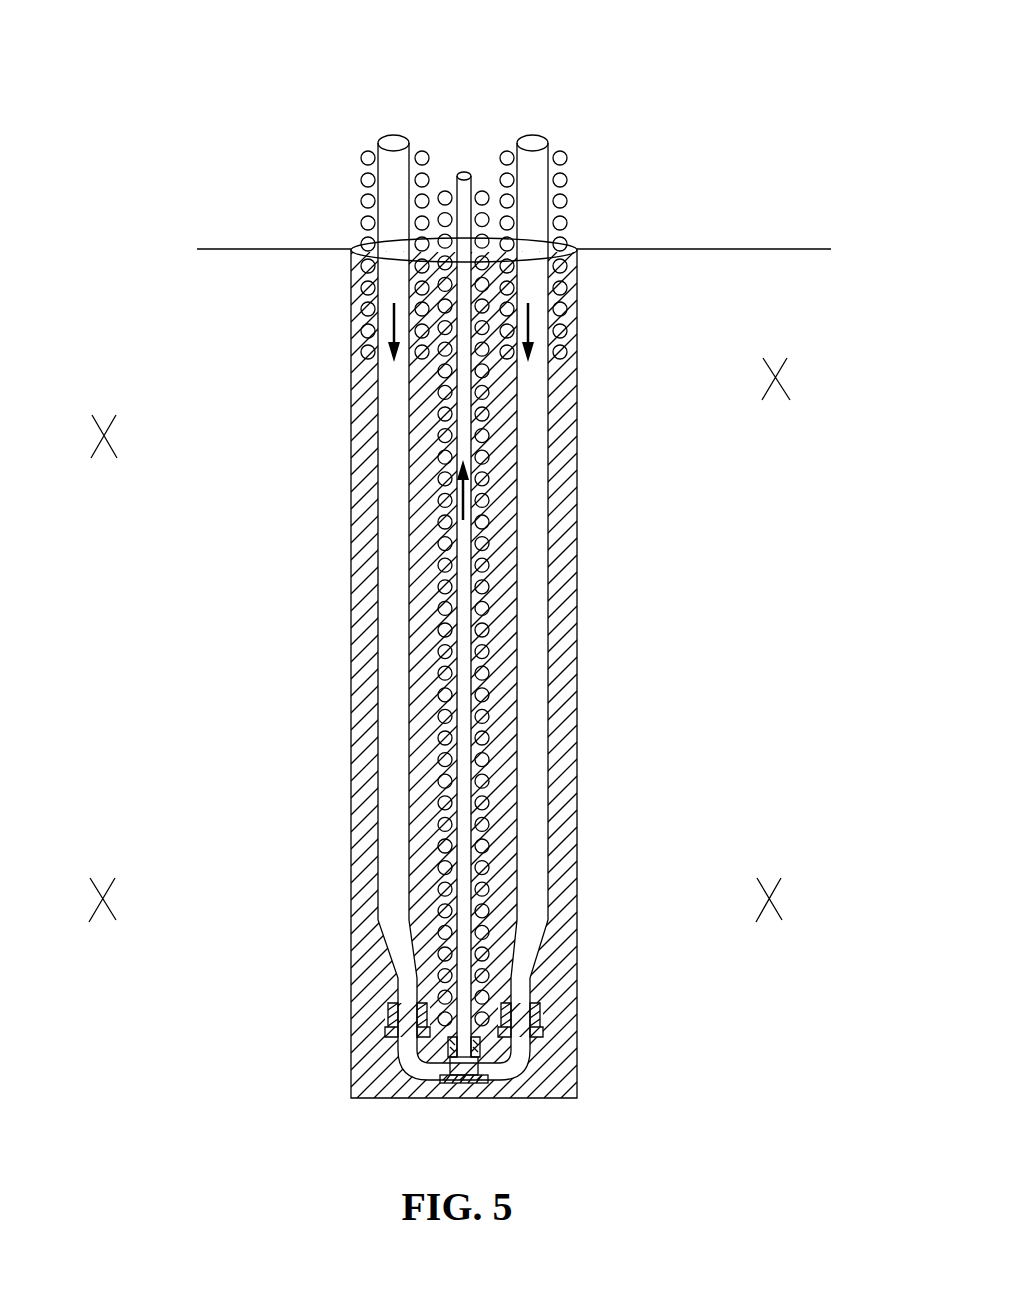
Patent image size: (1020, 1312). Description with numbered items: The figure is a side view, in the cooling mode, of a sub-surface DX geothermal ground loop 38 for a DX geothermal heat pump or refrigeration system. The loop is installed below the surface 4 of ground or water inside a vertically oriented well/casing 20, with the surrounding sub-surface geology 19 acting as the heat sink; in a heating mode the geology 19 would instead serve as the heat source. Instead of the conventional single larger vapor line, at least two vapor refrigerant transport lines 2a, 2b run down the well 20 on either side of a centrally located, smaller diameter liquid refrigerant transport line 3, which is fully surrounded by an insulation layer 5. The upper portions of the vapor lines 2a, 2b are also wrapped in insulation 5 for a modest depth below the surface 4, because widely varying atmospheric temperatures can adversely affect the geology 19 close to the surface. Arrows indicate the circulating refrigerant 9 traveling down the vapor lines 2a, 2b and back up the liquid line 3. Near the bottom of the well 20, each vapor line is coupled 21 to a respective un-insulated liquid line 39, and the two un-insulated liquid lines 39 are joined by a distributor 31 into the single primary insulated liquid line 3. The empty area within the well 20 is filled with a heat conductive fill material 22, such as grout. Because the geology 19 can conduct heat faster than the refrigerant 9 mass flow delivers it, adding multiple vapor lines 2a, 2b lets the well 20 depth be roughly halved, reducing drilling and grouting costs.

The sub-surface DX geothermal ground loop 38 is at (333, 68).
The insulation layer 5 is at (368, 150).
The surface 4 is at (293, 248).
The sub-surface geology 19 is at (820, 857).
The refrigerant 9 is at (390, 338).
The heat conductive fill material 22 is at (358, 441).
The well/casing 20 is at (577, 581).
The vapor refrigerant transport line 2a is at (395, 730).
The vapor refrigerant transport line 2b is at (532, 727).
The liquid refrigerant transport line 3 is at (463, 790).
The coupling 21 is at (388, 1015).
The un-insulated liquid line 39 is at (408, 1055).
The distributor 31 is at (440, 1081).